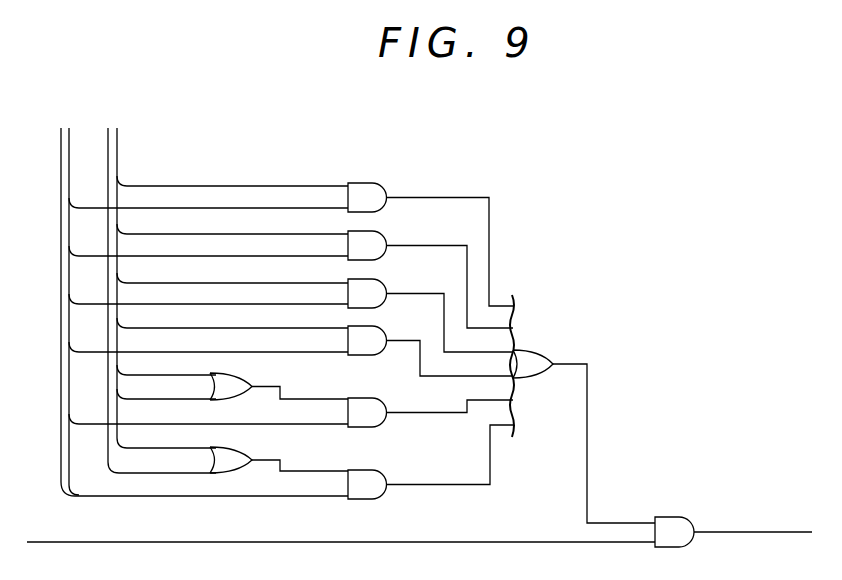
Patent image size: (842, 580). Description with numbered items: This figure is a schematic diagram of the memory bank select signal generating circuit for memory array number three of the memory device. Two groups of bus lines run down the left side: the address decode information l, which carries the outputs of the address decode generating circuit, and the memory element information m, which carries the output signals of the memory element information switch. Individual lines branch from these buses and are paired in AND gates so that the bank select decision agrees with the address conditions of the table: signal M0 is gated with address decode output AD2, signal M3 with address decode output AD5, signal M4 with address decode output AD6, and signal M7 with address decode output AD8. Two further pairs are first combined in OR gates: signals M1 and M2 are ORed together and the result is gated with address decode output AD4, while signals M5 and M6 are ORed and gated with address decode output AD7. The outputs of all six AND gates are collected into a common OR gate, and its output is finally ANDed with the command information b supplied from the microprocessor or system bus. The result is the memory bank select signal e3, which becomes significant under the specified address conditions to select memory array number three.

The address decode information l is at (60, 374).
The memory element information m is at (119, 140).
The memory element information signal M0 is at (200, 189).
The address decode output AD2 is at (203, 212).
The memory element information signal M3 is at (203, 237).
The address decode output AD5 is at (203, 260).
The memory element information signal M4 is at (203, 286).
The address decode output AD6 is at (203, 308).
The memory element information signal M7 is at (203, 331).
The address decode output AD8 is at (203, 356).
The memory element information signal M1 is at (139, 378).
The memory element information signal M2 is at (139, 402).
The address decode output AD4 is at (220, 428).
The memory element information signal M5 is at (139, 451).
The memory element information signal M6 is at (139, 476).
The address decode output AD7 is at (220, 500).
The command information b is at (297, 542).
The memory bank select signal e3 is at (757, 532).